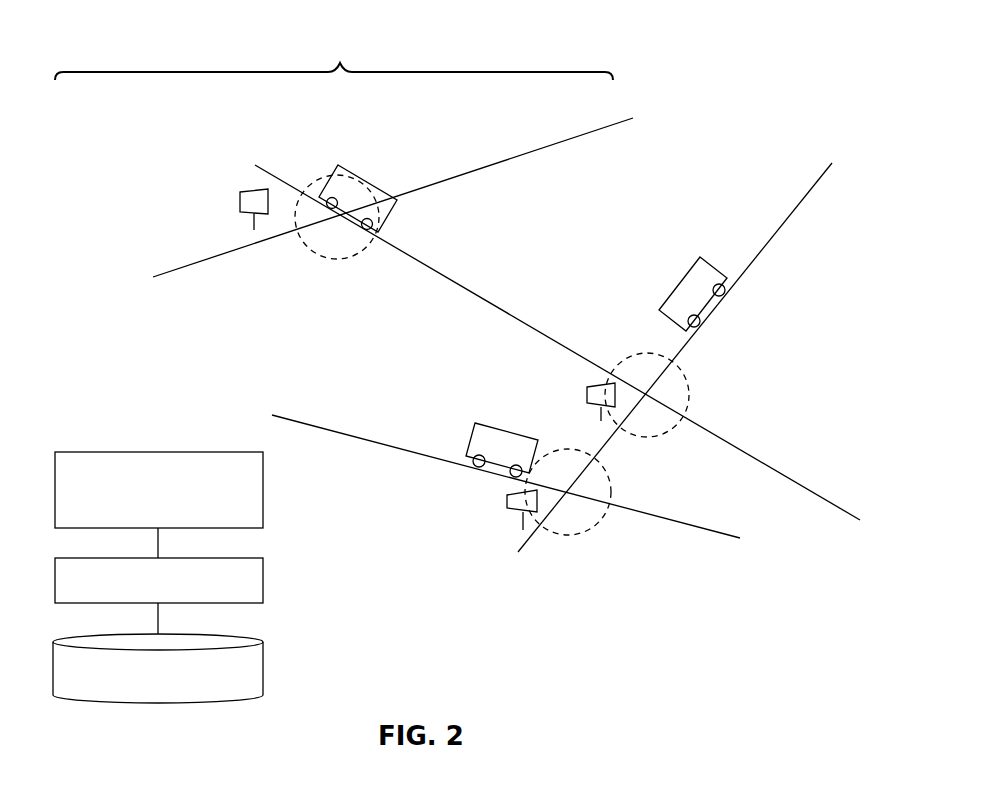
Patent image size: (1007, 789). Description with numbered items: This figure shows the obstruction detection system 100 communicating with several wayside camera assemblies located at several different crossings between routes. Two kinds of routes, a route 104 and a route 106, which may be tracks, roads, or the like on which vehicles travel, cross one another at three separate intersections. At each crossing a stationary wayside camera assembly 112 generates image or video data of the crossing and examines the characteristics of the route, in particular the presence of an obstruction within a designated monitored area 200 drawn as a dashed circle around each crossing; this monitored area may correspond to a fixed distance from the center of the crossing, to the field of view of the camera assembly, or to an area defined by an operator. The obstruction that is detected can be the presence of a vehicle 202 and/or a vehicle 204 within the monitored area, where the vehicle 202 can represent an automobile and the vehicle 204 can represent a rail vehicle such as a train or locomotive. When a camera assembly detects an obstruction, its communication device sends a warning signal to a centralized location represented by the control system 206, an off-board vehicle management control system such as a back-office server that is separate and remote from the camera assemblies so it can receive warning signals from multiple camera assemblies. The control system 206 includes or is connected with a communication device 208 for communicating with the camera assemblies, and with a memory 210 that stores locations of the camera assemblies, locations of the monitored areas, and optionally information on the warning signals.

The obstruction detection system 100 is at (340, 62).
The route 104 is at (520, 155).
The route 106 is at (787, 220).
The wayside camera assembly 112 is at (236, 182).
The monitored area 200 is at (308, 245).
The vehicle 202 is at (345, 173).
The vehicle 204 is at (683, 283).
The control system 206 is at (265, 580).
The communication device 208 is at (265, 490).
The memory 210 is at (265, 668).